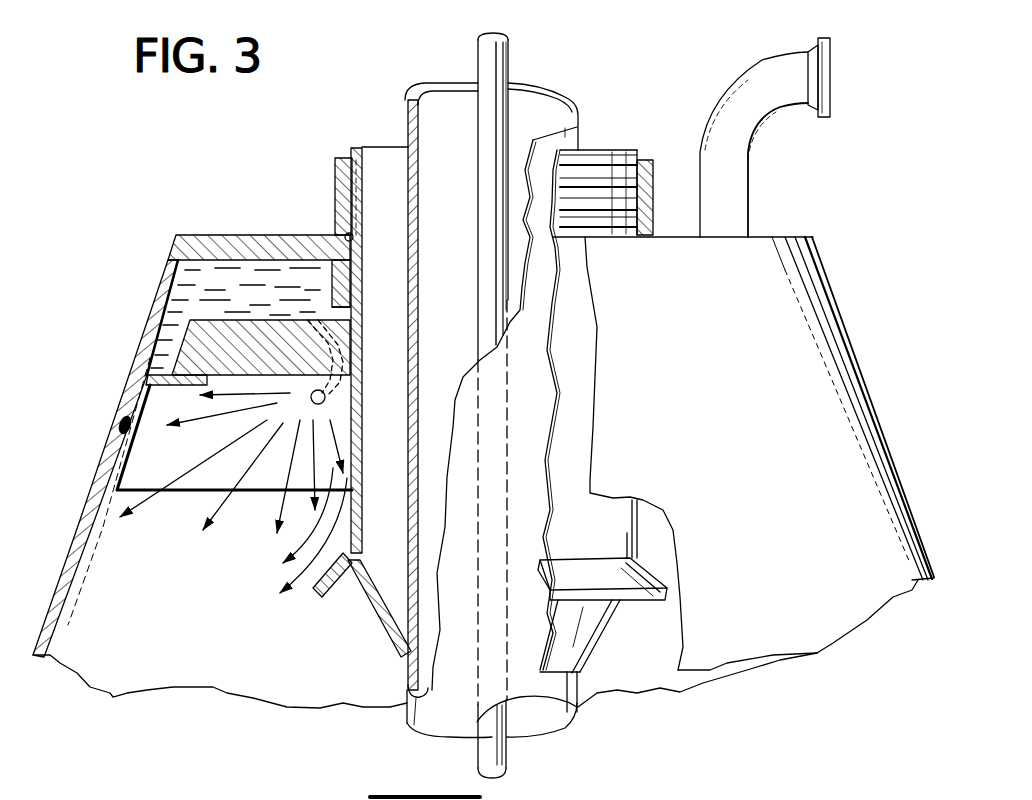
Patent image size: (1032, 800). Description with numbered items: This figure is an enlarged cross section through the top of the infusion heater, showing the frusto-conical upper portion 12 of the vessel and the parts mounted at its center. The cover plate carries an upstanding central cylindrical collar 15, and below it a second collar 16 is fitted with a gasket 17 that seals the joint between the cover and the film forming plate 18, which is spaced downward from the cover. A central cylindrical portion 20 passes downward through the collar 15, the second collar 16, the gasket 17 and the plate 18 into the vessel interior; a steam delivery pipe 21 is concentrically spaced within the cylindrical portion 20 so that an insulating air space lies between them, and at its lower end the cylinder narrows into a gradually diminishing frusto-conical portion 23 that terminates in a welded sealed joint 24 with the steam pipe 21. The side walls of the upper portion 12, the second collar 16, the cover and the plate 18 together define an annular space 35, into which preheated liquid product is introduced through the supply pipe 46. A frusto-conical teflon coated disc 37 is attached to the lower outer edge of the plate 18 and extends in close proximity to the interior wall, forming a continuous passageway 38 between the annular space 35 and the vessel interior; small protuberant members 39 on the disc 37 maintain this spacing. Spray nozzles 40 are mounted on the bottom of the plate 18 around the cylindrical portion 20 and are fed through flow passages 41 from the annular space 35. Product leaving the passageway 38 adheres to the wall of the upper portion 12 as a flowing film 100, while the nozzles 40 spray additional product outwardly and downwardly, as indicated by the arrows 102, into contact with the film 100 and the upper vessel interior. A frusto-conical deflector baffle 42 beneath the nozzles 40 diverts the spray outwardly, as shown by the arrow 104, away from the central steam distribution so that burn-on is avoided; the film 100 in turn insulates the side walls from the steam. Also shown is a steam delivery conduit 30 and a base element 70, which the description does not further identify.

The upper portion 12 is at (797, 323).
The central cylindrical collar 15 is at (333, 173).
The second collar 16 is at (343, 273).
The gasket 17 is at (323, 317).
The film forming plate 18 is at (235, 333).
The central cylindrical portion 20 is at (362, 147).
The steam delivery pipe 21 is at (440, 705).
The frusto-conical portion 23 is at (377, 617).
The welded sealed joint 24 is at (410, 665).
The rod 30 is at (493, 58).
The annular space 35 is at (192, 288).
The frusto-conical teflon coated disc 37 is at (128, 445).
The continuous passageway 38 is at (133, 393).
The protuberant members 39 is at (123, 420).
The spray nozzles 40 is at (328, 407).
The flow passages 41 is at (332, 356).
The deflector baffle 42 is at (333, 595).
The supply pipe 46 is at (748, 97).
The base 70 is at (525, 797).
The film 100 is at (77, 560).
The arrows 102 is at (200, 467).
The arrow 104 is at (307, 552).